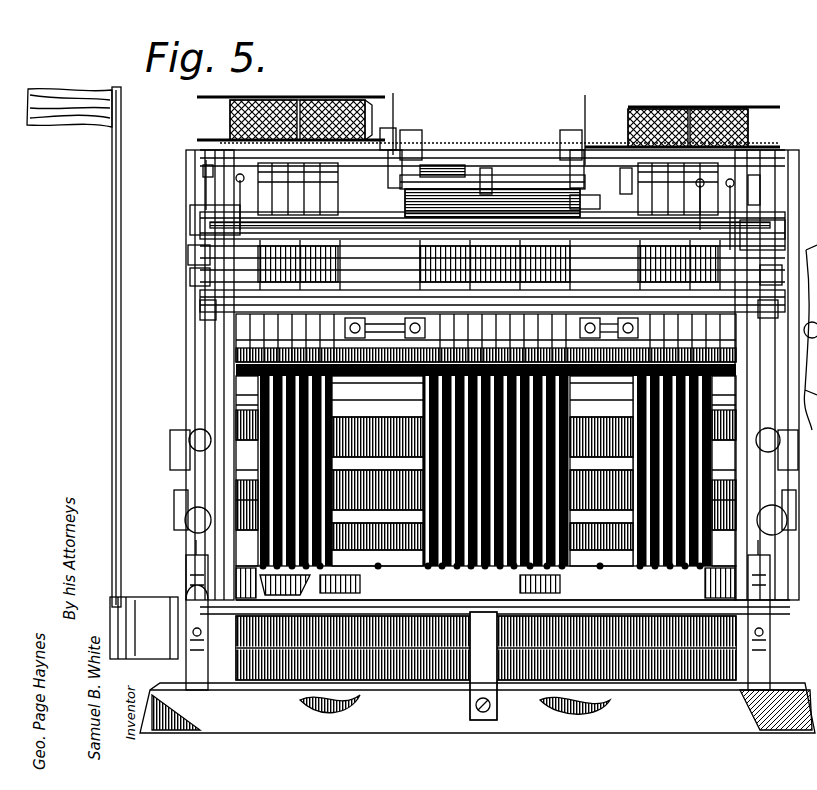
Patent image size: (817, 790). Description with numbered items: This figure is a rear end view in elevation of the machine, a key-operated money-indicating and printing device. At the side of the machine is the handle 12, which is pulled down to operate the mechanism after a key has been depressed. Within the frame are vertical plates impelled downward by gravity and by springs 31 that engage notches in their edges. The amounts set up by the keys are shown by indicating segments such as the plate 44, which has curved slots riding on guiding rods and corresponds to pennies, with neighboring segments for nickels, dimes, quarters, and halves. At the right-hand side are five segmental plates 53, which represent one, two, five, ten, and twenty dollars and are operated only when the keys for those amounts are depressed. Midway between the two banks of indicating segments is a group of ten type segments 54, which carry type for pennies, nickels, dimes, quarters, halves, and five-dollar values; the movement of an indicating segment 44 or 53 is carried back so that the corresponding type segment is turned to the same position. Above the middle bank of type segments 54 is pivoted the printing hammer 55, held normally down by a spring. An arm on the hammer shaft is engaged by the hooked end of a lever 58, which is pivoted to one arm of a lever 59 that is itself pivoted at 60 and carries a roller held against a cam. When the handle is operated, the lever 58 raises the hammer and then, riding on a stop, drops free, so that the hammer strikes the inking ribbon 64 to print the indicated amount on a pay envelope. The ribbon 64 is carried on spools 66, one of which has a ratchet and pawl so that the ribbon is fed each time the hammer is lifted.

The handle 12 is at (121, 284).
The springs 31 is at (440, 692).
The indicating segment 44 is at (330, 200).
The segmental plates 53 is at (707, 330).
The type segments 54 is at (490, 330).
The printing hammer 55 is at (415, 170).
The lever 58 is at (193, 270).
The lever 59 is at (193, 385).
The pivot 60 is at (178, 482).
The inking ribbon 64 is at (366, 102).
The spools 66 is at (320, 100).